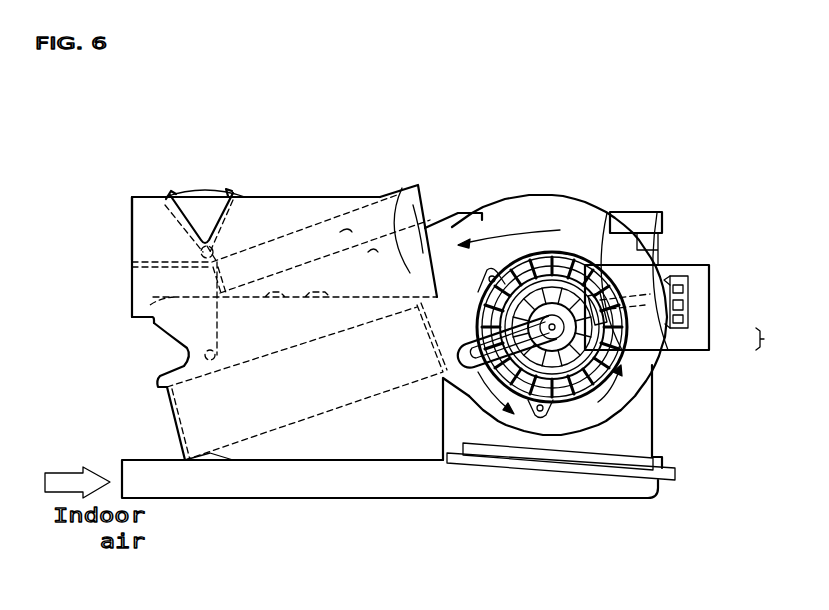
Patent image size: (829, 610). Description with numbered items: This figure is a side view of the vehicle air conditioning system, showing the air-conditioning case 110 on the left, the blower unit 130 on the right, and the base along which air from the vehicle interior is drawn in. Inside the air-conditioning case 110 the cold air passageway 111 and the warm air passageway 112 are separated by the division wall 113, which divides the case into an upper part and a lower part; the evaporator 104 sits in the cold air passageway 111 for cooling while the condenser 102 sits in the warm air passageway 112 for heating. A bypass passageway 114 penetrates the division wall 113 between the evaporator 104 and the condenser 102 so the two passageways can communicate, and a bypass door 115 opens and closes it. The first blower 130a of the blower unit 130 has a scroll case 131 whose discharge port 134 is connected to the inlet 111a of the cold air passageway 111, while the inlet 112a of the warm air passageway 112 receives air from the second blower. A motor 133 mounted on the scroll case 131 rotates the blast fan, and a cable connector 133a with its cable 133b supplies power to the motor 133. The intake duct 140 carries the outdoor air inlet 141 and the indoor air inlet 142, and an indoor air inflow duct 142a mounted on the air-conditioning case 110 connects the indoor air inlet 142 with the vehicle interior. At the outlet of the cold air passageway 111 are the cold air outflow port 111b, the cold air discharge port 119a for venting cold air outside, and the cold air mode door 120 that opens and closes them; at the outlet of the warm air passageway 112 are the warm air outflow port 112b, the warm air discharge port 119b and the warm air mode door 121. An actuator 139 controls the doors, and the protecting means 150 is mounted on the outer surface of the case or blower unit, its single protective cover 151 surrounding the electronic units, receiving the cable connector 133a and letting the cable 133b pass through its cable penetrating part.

The condenser 102 is at (247, 413).
The evaporator 104 is at (345, 230).
The air-conditioning case 110 is at (257, 194).
The cold air passageway 111 is at (421, 190).
The inlet of the cold air passageway 111a is at (398, 195).
The cold air outflow port 111b is at (135, 195).
The warm air passageway 112 is at (345, 433).
The inlet of the warm air passageway 112a is at (436, 445).
The warm air outflow port 112b is at (150, 318).
The division wall 113 is at (372, 250).
The bypass passageway 114 is at (280, 194).
The bypass door 115 is at (293, 237).
The cold air discharge port 119a is at (218, 195).
The warm air discharge port 119b is at (160, 380).
The cold air mode door 120 is at (197, 190).
The warm air mode door 121 is at (165, 338).
The blower unit 130 is at (695, 259).
The first blower 130a is at (572, 194).
The scroll case 131 is at (615, 412).
The motor 133 is at (575, 405).
The cable connector 133a is at (598, 295).
The cable 133b is at (662, 290).
The discharge port 134 is at (482, 200).
The actuator 139 is at (690, 290).
The intake duct 140 is at (655, 404).
The outdoor air inlet 141 is at (632, 212).
The indoor air inlet 142 is at (600, 477).
The indoor air inflow duct 142a is at (385, 478).
The protecting means 150 is at (773, 339).
The protective cover 151 is at (709, 333).